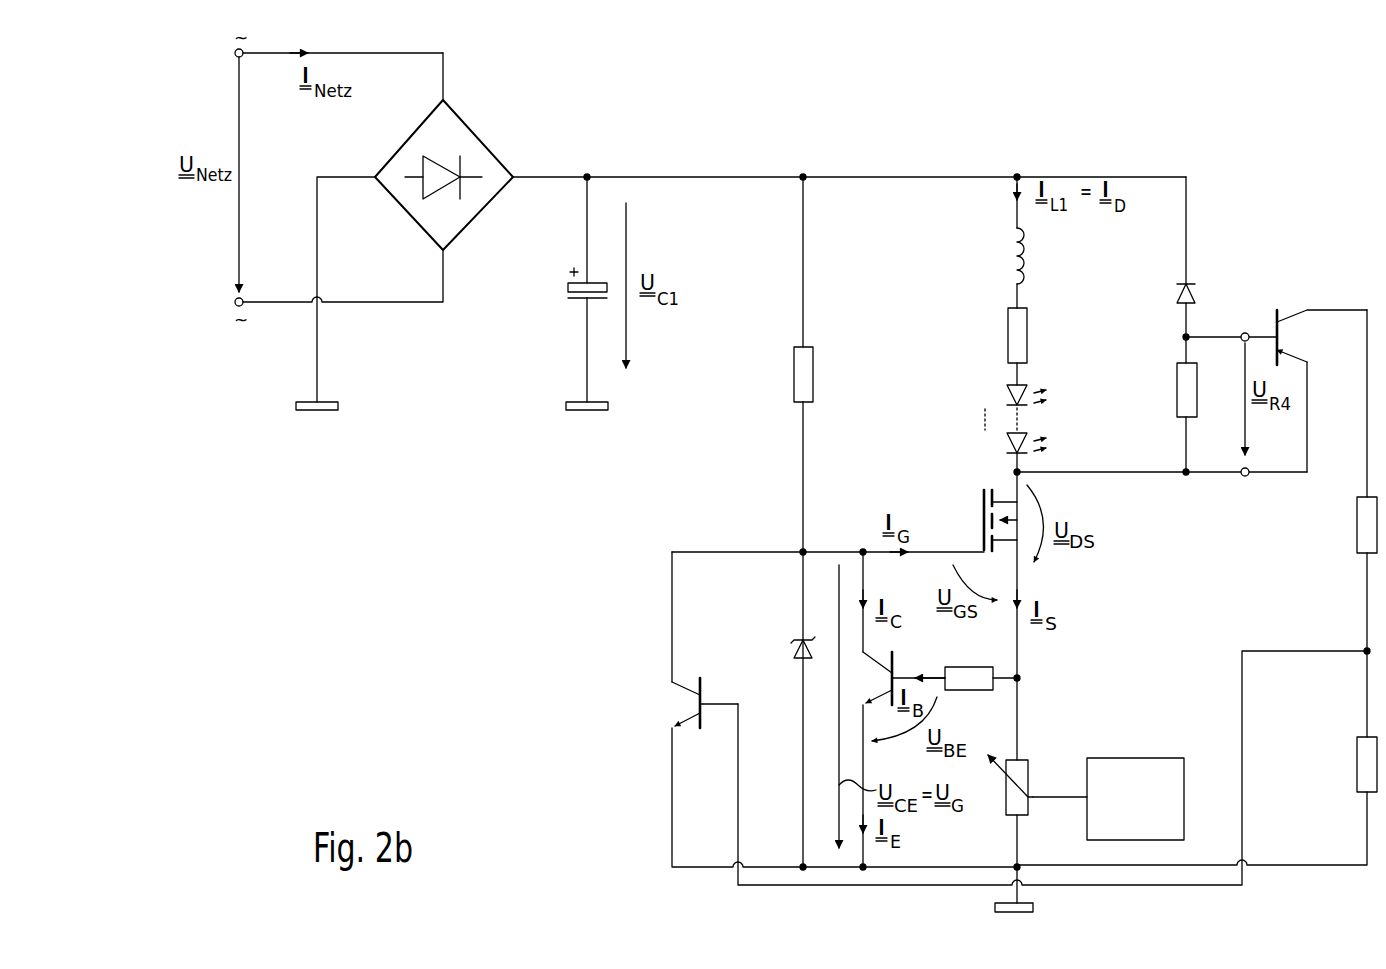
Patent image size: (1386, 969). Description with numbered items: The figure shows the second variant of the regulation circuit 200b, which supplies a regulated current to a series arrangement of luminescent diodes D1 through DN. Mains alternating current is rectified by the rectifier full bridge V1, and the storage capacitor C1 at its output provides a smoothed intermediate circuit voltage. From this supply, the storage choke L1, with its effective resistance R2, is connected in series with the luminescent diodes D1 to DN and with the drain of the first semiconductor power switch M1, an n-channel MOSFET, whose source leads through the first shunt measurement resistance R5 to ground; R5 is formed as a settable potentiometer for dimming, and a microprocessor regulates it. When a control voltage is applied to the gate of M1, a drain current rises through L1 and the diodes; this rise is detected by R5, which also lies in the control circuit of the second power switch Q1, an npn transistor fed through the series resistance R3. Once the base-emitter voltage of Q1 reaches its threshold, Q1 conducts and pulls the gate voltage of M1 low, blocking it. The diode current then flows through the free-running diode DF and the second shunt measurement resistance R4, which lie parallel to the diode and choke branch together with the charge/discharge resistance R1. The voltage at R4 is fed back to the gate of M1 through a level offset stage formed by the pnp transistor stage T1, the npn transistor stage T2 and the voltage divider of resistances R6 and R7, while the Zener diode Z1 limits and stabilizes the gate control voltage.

The regulation circuit 200b is at (899, 136).
The rectifier full bridge V1 is at (444, 175).
The storage capacitor C1 is at (571, 293).
The low voltage charge/discharge resistance R1 is at (788, 289).
The Zener diode Z1 is at (790, 651).
The storage choke L1 is at (1000, 256).
The effective resistance of the ballast choke R2 is at (1001, 335).
The luminescent diode D1 is at (1010, 395).
The luminescent diode DN is at (1009, 444).
The free-running diode DF is at (1171, 294).
The second low voltage shunt measurement resistance R4 is at (1173, 390).
The first transistor stage T1 is at (1309, 388).
The first resistance of a voltage divider R6 is at (1353, 525).
The second resistance of a voltage divider R7 is at (1353, 764).
The first low voltage shunt measurement resistance R5 is at (1004, 785).
The first electronically controllable semiconductor power switch M1 is at (986, 520).
The second electronically controllable semiconductor power switch Q1 is at (892, 675).
The series resistance R3 is at (969, 666).
The second transistor stage T2 is at (692, 703).